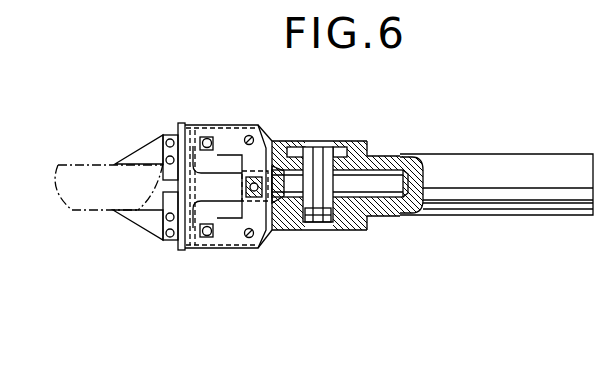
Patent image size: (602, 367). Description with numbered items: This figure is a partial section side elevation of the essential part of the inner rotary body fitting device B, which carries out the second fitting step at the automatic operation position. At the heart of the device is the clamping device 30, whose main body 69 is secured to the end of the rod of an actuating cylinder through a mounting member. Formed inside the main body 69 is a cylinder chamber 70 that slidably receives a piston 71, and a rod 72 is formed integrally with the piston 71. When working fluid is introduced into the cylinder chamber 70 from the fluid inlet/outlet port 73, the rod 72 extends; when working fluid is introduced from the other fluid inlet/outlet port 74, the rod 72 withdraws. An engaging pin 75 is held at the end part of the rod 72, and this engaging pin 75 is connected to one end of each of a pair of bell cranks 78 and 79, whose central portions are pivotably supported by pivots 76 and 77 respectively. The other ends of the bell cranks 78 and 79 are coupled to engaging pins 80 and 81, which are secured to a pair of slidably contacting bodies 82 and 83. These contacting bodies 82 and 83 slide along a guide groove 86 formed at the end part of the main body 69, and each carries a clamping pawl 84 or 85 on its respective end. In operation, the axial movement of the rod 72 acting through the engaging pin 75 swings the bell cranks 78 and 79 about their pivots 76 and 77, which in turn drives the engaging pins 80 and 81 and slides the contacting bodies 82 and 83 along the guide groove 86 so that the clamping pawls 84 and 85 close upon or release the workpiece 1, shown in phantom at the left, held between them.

The rod / cylinder 1 is at (72, 164).
The clamping device 30 is at (194, 175).
The clamping pawl 84 is at (140, 158).
The clamping pawl 85 is at (137, 217).
The guide groove 86 is at (181, 126).
The bell crank 78 is at (230, 134).
The bell crank 79 is at (234, 239).
The engaging pin 80 is at (206, 138).
The engaging pin 81 is at (202, 239).
The slidably contacting body 82 is at (230, 171).
The slidably contacting body 83 is at (228, 202).
The pivot 76 is at (251, 137).
The pivot 77 is at (252, 237).
The engaging pin 75 is at (254, 198).
The inner rotary body fitting device B is at (347, 161).
The fluid inlet/outlet port 74 is at (288, 150).
The fluid inlet/outlet port 73 is at (348, 146).
The rod 72 is at (286, 198).
The cylinder chamber 70 is at (310, 150).
The piston 71 is at (318, 223).
The main body 69 is at (478, 155).